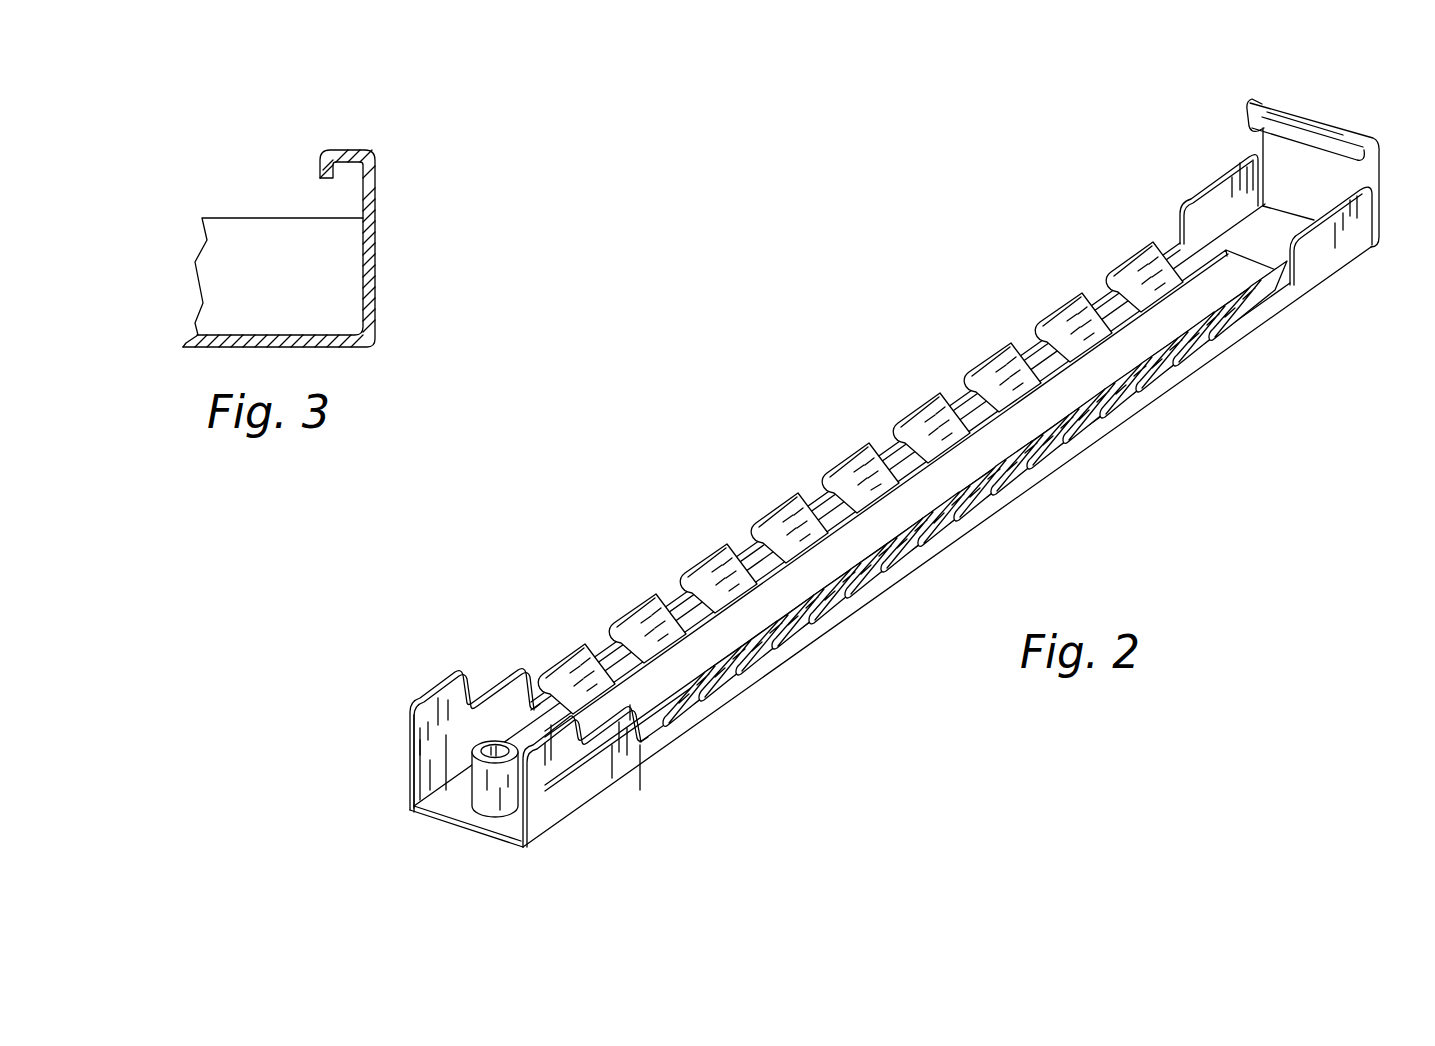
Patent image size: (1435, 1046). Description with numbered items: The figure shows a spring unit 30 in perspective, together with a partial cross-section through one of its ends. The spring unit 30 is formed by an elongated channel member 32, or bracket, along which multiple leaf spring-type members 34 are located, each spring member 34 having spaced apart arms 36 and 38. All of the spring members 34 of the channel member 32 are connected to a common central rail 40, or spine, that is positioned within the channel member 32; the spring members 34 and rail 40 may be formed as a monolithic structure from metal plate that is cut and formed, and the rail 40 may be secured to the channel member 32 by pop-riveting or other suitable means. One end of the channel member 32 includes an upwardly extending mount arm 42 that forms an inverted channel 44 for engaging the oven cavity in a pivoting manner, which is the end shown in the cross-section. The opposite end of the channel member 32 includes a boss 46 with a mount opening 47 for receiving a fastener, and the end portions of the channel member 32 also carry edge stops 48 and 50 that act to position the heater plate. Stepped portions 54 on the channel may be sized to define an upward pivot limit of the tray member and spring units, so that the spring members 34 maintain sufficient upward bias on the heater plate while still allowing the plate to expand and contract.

In FIG. 2, the spring unit 30 is at (1236, 365).
In FIG. 2, the channel member 32 is at (505, 820).
In FIG. 2, the leaf spring-type member 34 is at (860, 478).
In FIG. 2, the arm 36 is at (858, 463).
In FIG. 2, the arm 38 is at (1052, 458).
In FIG. 2, the central rail 40 is at (1076, 381).
In FIG. 3, the mount arm 42 is at (377, 184).
In FIG. 2, the mount arm 42 is at (1310, 120).
In FIG. 3, the inverted channel 44 is at (347, 177).
In FIG. 2, the boss 46 is at (488, 780).
In FIG. 2, the mount opening 47 is at (494, 744).
In FIG. 3, the edge stop 48 is at (253, 258).
In FIG. 2, the edge stop 48 is at (1178, 220).
In FIG. 2, the edge stop 50 is at (526, 668).
In FIG. 2, the stepped portion 54 is at (441, 686).